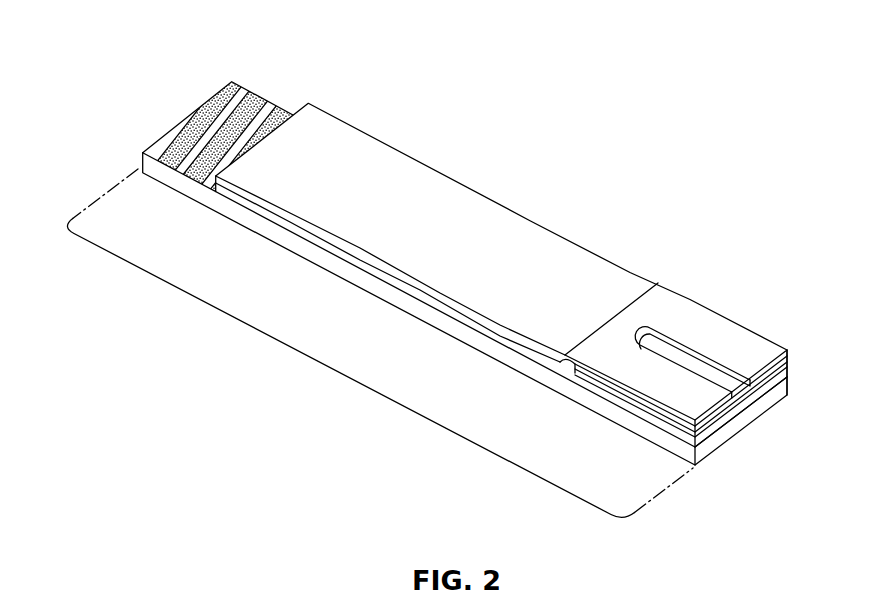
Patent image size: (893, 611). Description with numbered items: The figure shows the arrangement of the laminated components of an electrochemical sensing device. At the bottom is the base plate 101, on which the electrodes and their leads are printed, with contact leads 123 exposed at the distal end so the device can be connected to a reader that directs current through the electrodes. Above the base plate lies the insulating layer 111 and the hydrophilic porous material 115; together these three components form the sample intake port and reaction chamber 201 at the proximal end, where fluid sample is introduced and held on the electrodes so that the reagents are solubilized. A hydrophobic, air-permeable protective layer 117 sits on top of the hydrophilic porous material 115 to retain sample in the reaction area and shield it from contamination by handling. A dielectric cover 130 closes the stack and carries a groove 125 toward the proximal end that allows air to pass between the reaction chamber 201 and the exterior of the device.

The base plate 101 is at (336, 371).
The insulating layer 111 is at (667, 428).
The hydrophilic porous material 115 is at (709, 438).
The protective layer 117 is at (787, 365).
The contact leads 123 is at (203, 66).
The groove 125 is at (684, 362).
The cover 130 is at (358, 155).
The reaction chamber 201 is at (742, 412).